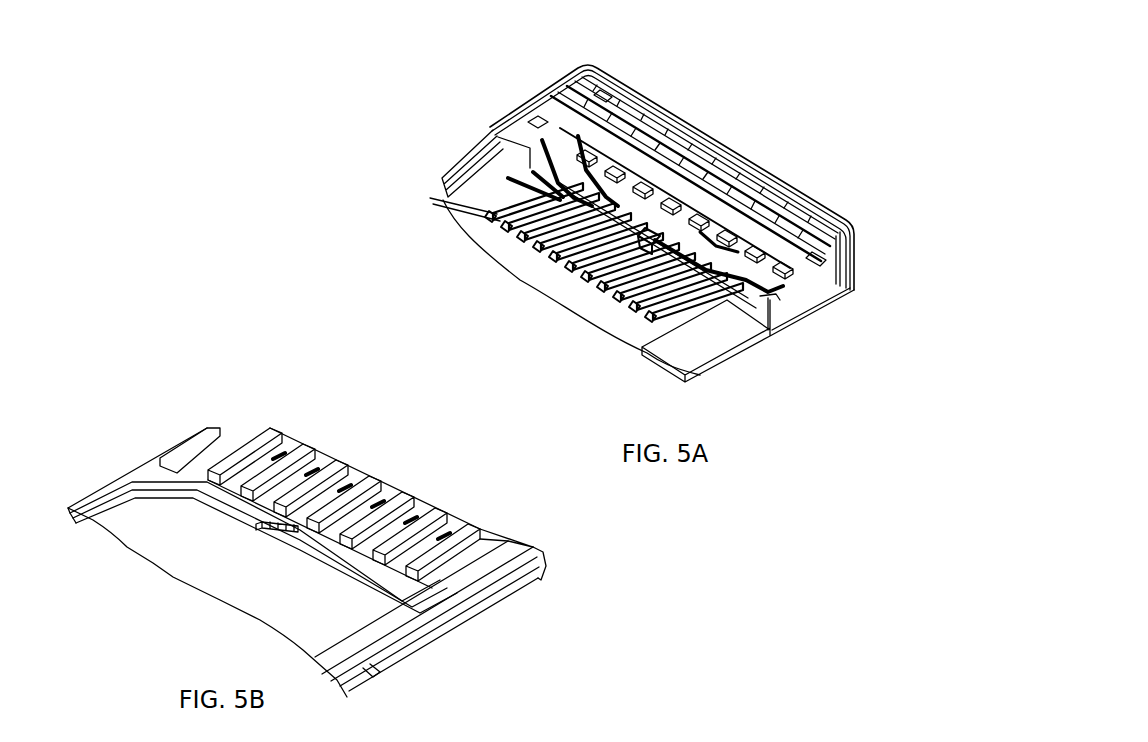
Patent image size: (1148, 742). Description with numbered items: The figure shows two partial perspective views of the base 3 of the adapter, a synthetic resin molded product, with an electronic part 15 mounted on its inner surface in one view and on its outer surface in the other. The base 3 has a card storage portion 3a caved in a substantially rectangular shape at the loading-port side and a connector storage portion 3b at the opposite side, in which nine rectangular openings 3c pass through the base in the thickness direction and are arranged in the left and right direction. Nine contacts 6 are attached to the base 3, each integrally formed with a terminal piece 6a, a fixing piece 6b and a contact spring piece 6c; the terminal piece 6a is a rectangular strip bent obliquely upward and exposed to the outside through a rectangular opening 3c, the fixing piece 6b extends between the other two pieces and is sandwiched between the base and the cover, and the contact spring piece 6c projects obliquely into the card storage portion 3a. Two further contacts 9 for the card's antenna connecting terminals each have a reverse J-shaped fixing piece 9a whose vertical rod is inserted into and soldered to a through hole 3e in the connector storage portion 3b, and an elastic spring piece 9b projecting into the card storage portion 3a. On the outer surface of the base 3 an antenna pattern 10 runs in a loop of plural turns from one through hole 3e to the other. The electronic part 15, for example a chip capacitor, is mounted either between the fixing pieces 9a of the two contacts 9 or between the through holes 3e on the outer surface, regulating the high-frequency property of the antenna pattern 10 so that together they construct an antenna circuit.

In FIG. 5A, the base 3 is at (490, 128).
In FIG. 5B, the base 3 is at (545, 585).
In FIG. 5A, the card storage portion 3a is at (520, 257).
In FIG. 5A, the connector storage portion 3b is at (768, 232).
In FIG. 5A, the rectangular opening 3c is at (827, 290).
In FIG. 5B, the rectangular opening 3c is at (480, 527).
In FIG. 5B, the through hole 3e is at (260, 527).
In FIG. 5A, the contact 6 is at (566, 112).
In FIG. 5A, the terminal piece 6a is at (604, 92).
In FIG. 5B, the terminal piece 6a is at (417, 547).
In FIG. 5A, the fixing piece 6b is at (538, 125).
In FIG. 5A, the contact spring piece 6c is at (497, 214).
In FIG. 5A, the contact 9 is at (638, 262).
In FIG. 5A, the fixing piece 9a is at (657, 246).
In FIG. 5A, the elastic spring piece 9b is at (590, 280).
In FIG. 5B, the antenna pattern 10 is at (412, 622).
In FIG. 5A, the electronic part 15 is at (663, 228).
In FIG. 5B, the electronic part 15 is at (290, 527).